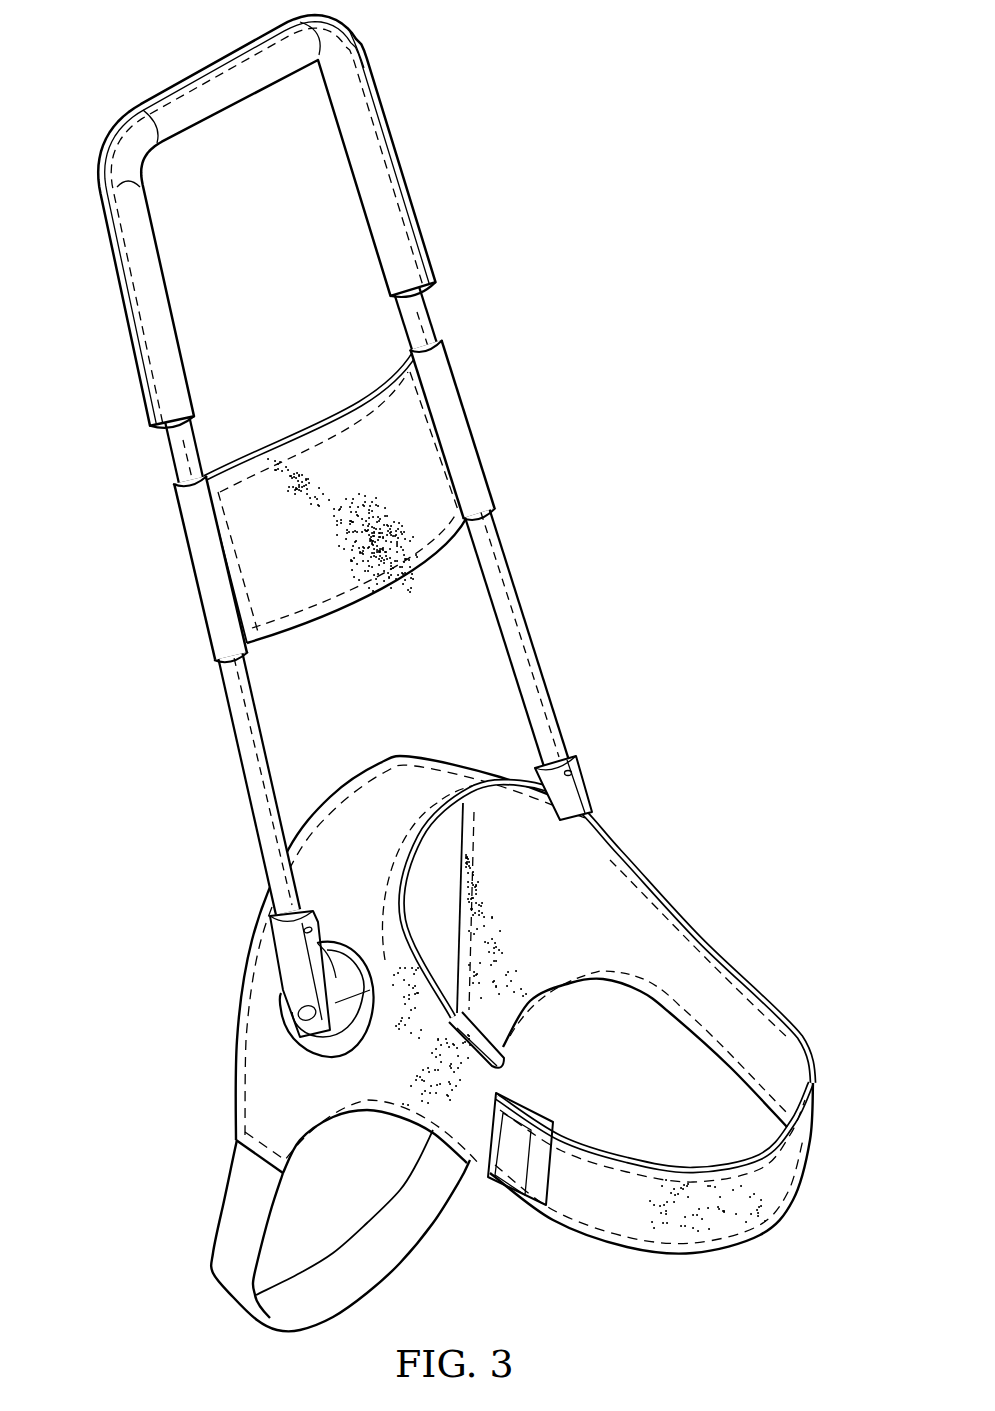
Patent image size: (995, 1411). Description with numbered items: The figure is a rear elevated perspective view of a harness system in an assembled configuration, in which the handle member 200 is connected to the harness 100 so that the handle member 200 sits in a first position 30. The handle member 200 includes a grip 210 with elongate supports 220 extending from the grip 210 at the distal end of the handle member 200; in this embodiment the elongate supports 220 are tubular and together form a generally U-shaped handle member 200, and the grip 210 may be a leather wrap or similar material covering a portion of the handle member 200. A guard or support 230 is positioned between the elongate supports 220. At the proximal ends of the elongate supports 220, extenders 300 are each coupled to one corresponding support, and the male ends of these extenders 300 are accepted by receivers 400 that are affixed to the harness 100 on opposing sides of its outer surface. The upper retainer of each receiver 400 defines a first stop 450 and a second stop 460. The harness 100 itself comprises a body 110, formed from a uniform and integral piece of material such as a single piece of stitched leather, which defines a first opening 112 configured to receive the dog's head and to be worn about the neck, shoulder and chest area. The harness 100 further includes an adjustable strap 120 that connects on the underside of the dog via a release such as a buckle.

The first position 30 is at (449, 667).
The harness 100 is at (765, 997).
The body 110 is at (380, 788).
The first opening 112 is at (641, 1039).
The adjustable strap 120 is at (387, 1240).
The handle member 200 is at (293, 216).
The grip 210 is at (220, 90).
The elongate supports 220 is at (178, 454).
The guard or support 230 is at (350, 452).
The extenders 300 is at (588, 787).
The receivers 400 is at (268, 996).
The first stop 450 is at (345, 978).
The second stop 460 is at (275, 995).